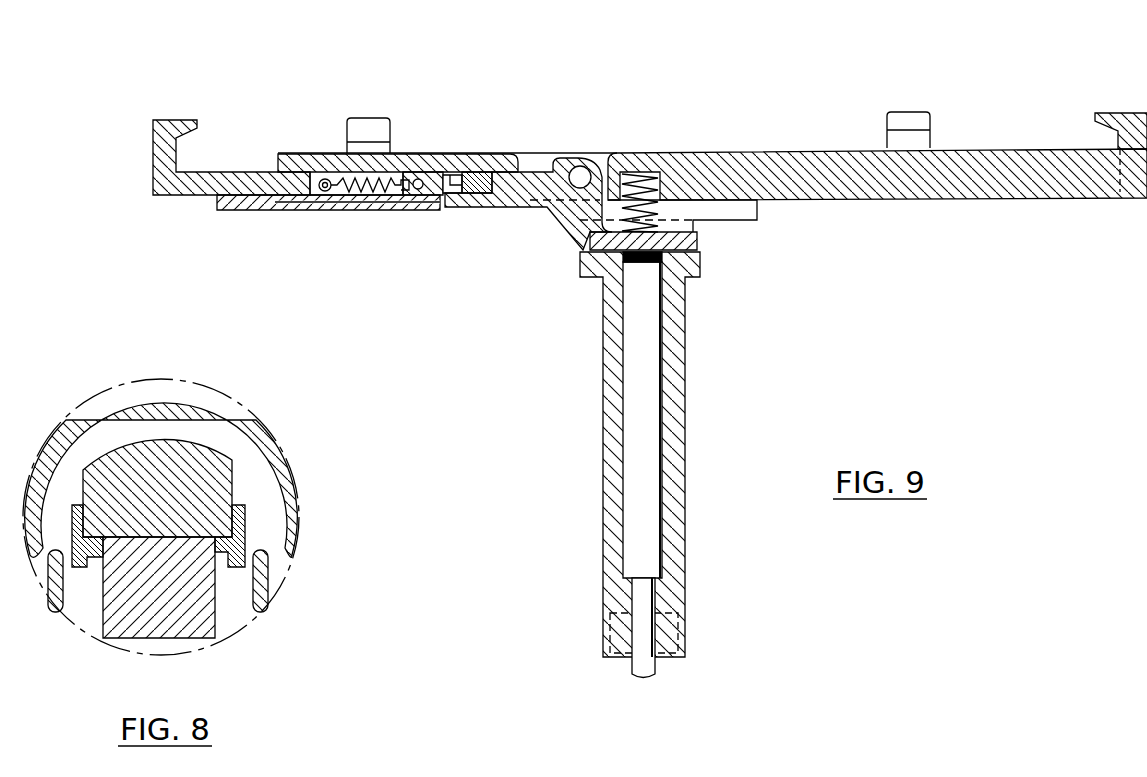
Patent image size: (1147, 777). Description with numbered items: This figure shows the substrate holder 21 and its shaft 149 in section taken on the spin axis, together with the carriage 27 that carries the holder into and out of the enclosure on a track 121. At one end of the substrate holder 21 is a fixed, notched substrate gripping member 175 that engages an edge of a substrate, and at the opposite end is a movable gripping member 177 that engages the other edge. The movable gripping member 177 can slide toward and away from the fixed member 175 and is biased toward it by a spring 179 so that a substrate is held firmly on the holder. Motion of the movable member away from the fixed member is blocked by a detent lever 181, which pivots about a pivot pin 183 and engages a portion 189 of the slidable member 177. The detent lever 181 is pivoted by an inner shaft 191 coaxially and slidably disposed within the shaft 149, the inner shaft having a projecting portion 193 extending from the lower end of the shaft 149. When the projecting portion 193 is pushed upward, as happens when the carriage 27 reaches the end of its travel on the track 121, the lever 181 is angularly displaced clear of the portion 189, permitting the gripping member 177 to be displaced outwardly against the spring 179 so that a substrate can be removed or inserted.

In FIG. 9, the substrate holder 21 is at (875, 212).
In FIG. 8, the carriage 27 is at (270, 462).
In FIG. 8, the track 121 is at (203, 607).
In FIG. 9, the shaft 149 is at (677, 375).
In FIG. 9, the fixed notched substrate gripping member 175 is at (1146, 80).
In FIG. 9, the movable gripping member 177 is at (153, 176).
In FIG. 9, the spring 179 is at (373, 196).
In FIG. 9, the detent lever 181 is at (563, 210).
In FIG. 9, the pivot pin 183 is at (580, 177).
In FIG. 9, the portion of slidable member 189 is at (487, 175).
In FIG. 9, the inner shaft 191 is at (645, 437).
In FIG. 9, the projecting portion 193 is at (648, 668).